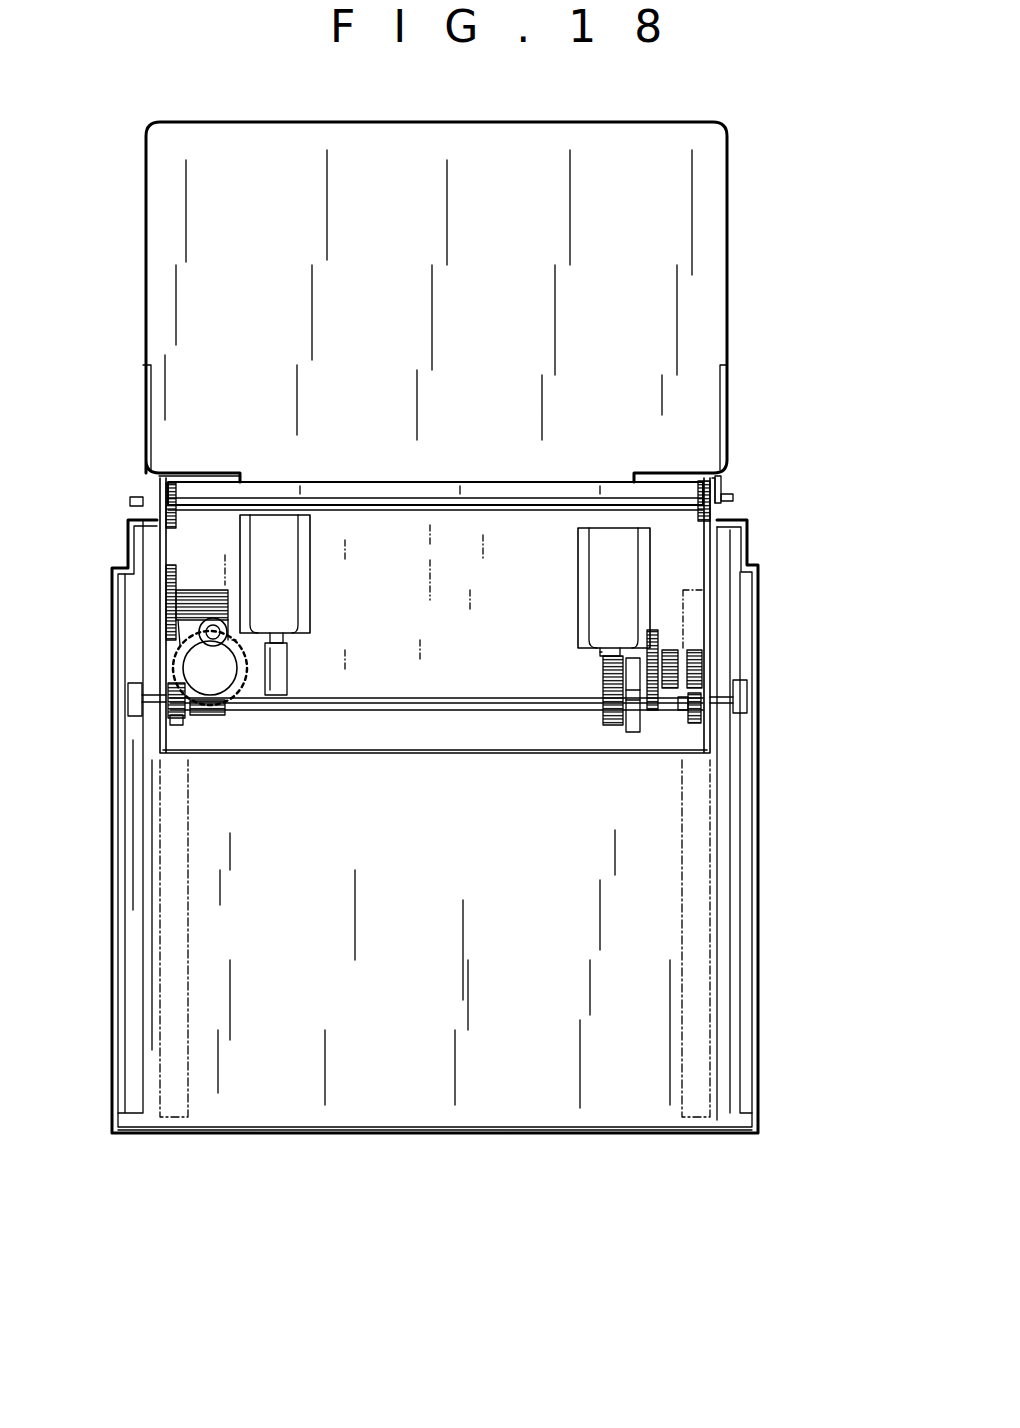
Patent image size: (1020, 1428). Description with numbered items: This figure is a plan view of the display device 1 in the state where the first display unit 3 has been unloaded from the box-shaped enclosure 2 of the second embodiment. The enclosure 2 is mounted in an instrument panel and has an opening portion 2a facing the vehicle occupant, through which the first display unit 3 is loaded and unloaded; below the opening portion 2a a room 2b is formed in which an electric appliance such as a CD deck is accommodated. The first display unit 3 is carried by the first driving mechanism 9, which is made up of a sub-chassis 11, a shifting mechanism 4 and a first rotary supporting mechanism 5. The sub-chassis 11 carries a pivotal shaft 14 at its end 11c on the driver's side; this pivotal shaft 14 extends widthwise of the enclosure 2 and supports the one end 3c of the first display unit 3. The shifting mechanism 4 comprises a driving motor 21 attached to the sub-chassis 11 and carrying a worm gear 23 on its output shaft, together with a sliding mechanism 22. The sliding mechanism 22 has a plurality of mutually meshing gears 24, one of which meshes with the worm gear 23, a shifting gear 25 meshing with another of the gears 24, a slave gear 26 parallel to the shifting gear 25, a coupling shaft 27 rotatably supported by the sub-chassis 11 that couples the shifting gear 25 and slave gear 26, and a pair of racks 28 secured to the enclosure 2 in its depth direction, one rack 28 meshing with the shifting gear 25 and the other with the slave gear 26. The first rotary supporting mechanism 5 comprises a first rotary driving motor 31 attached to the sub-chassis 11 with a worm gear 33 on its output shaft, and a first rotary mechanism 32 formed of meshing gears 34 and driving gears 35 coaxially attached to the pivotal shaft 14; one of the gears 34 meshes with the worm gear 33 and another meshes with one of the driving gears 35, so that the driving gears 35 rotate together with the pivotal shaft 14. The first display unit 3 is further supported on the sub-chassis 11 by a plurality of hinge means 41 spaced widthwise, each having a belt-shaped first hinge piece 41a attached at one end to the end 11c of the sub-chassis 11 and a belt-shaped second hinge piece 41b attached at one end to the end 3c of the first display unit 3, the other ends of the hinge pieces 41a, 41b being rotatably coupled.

The display device 1 is at (788, 296).
The enclosure 2 is at (760, 1018).
The opening portion 2a is at (140, 520).
The room 2b is at (490, 1140).
The first display unit 3 is at (731, 226).
The end of the first display unit 3c is at (218, 453).
The shifting mechanism 4 is at (510, 650).
The first rotary supporting mechanism 5 is at (393, 602).
The first driving mechanism 9 is at (716, 1358).
The sub-chassis 11 is at (720, 544).
The end of the sub-chassis 11c is at (462, 536).
The pivotal shaft 14 is at (472, 500).
The driving motor 21 is at (582, 596).
The sliding mechanism 22 is at (590, 690).
The worm gear 23 is at (603, 660).
The gears 24 is at (652, 632).
The shifting gear 25 is at (705, 740).
The slave gear 26 is at (170, 692).
The coupling shaft 27 is at (412, 703).
The racks 28 is at (180, 943).
The first rotary driving motor 31 is at (313, 540).
The first rotary mechanism 32 is at (300, 692).
The worm gear 33 is at (292, 668).
The gears 34 is at (205, 592).
The driving gears 35 is at (176, 480).
The hinge means 41 is at (745, 492).
The first hinge piece 41a is at (728, 500).
The second hinge piece 41b is at (718, 478).